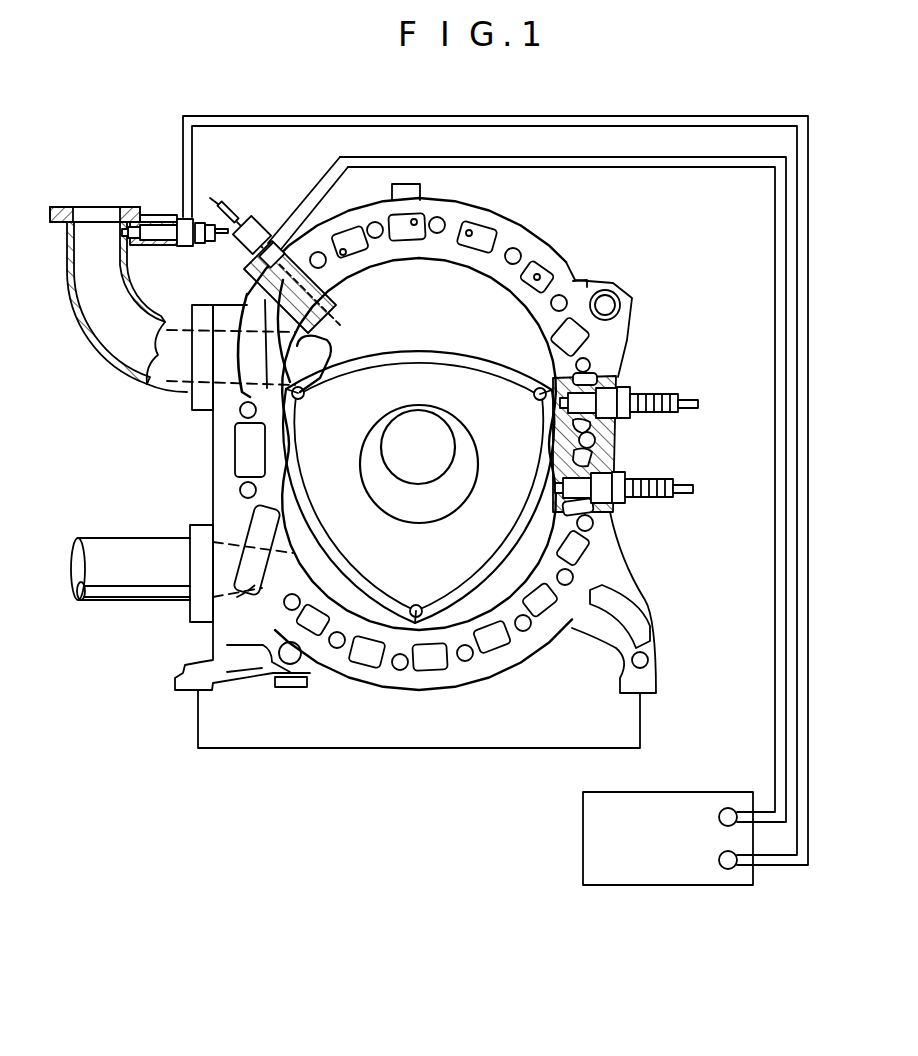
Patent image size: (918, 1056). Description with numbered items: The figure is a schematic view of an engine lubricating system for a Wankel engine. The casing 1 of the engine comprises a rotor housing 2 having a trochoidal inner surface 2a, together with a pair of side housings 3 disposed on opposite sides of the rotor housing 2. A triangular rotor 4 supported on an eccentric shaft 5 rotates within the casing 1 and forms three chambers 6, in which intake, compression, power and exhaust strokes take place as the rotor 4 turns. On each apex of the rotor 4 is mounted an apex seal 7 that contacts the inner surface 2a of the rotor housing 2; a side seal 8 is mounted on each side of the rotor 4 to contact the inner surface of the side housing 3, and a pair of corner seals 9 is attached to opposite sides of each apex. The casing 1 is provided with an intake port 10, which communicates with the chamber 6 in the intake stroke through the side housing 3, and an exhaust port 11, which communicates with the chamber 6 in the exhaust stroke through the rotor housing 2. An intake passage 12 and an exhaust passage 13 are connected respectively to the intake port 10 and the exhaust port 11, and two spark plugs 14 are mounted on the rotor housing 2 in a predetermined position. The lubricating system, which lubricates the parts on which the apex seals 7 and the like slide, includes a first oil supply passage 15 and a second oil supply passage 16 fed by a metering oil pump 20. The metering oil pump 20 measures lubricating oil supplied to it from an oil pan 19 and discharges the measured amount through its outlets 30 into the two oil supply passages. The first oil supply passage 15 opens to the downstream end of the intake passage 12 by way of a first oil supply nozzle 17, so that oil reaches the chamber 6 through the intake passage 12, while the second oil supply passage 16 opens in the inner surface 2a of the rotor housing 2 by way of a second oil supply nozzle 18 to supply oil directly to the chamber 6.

The casing 1 is at (548, 245).
The rotor housing 2 is at (520, 226).
The trochoidal inner surface 2a is at (400, 259).
The side housing 3 is at (545, 290).
The triangular rotor 4 is at (387, 607).
The eccentric shaft 5 is at (456, 448).
The chamber 6 is at (446, 326).
The apex seal 7 is at (545, 388).
The side seal 8 is at (448, 366).
The corner seal 9 is at (304, 395).
The intake port 10 is at (318, 340).
The exhaust port 11 is at (253, 587).
The intake passage 12 is at (125, 330).
The exhaust passage 13 is at (126, 548).
The spark plug 14 is at (652, 390).
The first oil supply passage 15 is at (718, 116).
The second oil supply passage 16 is at (778, 218).
The first oil supply nozzle 17 is at (162, 215).
The second oil supply nozzle 18 is at (292, 280).
The oil pan 19 is at (436, 750).
The metering oil pump 20 is at (632, 893).
The outlet 30 is at (722, 825).